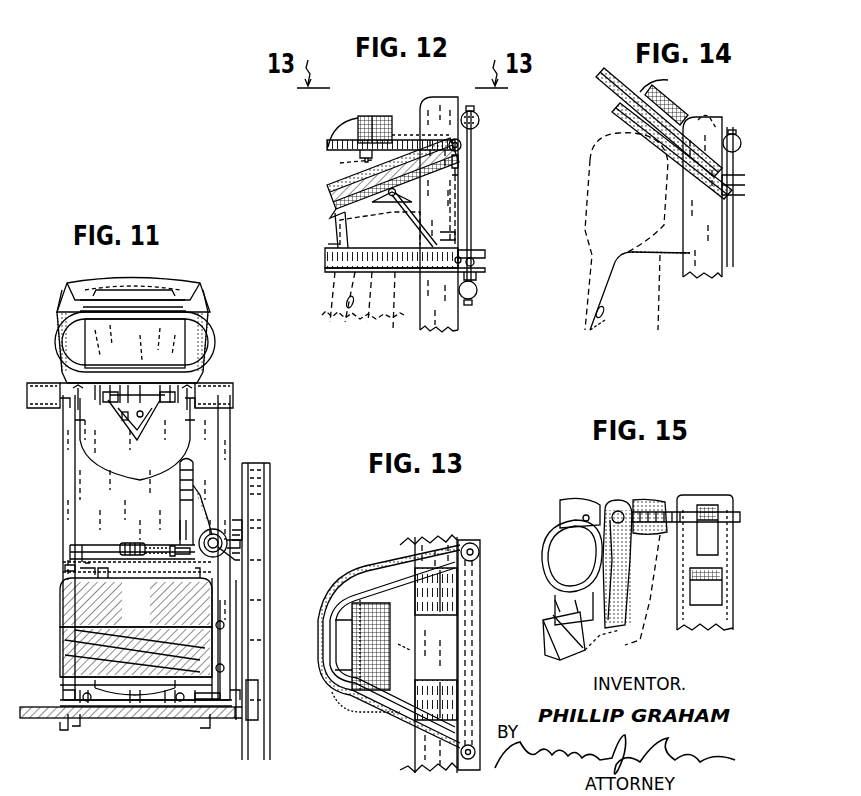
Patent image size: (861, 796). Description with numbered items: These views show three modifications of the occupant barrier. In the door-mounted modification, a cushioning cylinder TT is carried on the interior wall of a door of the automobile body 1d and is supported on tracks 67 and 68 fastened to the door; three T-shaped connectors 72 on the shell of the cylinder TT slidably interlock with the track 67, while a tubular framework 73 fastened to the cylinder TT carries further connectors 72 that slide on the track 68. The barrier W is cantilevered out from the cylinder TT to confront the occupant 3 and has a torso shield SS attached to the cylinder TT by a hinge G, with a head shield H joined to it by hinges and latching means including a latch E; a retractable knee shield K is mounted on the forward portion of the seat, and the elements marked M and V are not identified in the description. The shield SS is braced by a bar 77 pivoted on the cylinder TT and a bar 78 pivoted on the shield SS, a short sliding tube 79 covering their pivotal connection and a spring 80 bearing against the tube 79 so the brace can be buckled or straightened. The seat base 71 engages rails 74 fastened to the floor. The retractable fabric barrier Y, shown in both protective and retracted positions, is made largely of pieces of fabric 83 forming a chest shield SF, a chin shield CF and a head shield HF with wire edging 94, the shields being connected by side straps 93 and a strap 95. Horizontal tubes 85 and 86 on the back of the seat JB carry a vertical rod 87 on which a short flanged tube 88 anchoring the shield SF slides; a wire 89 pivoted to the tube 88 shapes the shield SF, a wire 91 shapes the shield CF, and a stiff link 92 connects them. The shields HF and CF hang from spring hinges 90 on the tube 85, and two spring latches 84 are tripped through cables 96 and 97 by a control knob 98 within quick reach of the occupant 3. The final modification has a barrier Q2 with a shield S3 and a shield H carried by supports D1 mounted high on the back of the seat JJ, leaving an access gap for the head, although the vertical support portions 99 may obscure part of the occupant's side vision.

In FIG. 11, the barrier W is at (49, 282).
In FIG. 11, the head shield H is at (48, 300).
In FIG. 15, the head shield H is at (609, 497).
In FIG. 11, the helmet top member M is at (152, 295).
In FIG. 11, the visor V is at (45, 337).
In FIG. 11, the torso shield SS is at (209, 443).
In FIG. 11, the latch E is at (131, 428).
In FIG. 11, the hinge G is at (209, 491).
In FIG. 11, the track 67 is at (225, 535).
In FIG. 11, the T-shaped connectors 72 is at (232, 550).
In FIG. 11, the bar 78 is at (100, 536).
In FIG. 11, the sliding tube 79 is at (125, 542).
In FIG. 11, the spring 80 is at (152, 546).
In FIG. 11, the bar 77 is at (172, 545).
In FIG. 11, the cushioning cylinder TT is at (199, 568).
In FIG. 11, the tubular framework 73 is at (220, 600).
In FIG. 11, the knee shield K is at (115, 677).
In FIG. 11, the seat base 71 is at (200, 690).
In FIG. 11, the rails 74 is at (70, 700).
In FIG. 11, the automobile body 1d is at (137, 719).
In FIG. 11, the track 68 is at (233, 708).
In FIG. 12, the seat JB is at (442, 338).
In FIG. 14, the seat JB is at (709, 289).
In FIG. 13, the seat JB is at (438, 527).
In FIG. 12, the head shield HF is at (322, 126).
In FIG. 14, the head shield HF is at (696, 99).
In FIG. 13, the head shield HF is at (370, 705).
In FIG. 12, the fabric 83 is at (365, 130).
In FIG. 12, the hinges 90 is at (450, 138).
In FIG. 13, the hinges 90 is at (437, 618).
In FIG. 12, the horizontal tube 85 is at (480, 121).
In FIG. 13, the horizontal tube 85 is at (470, 610).
In FIG. 12, the retractable fabric barrier Y is at (271, 159).
In FIG. 14, the retractable fabric barrier Y is at (626, 130).
In FIG. 12, the wire edging 94 is at (330, 150).
In FIG. 12, the side straps 93 is at (370, 161).
In FIG. 12, the chin shield CF is at (283, 216).
In FIG. 14, the chin shield CF is at (605, 58).
In FIG. 13, the chin shield CF is at (366, 612).
In FIG. 12, the wire 91 is at (332, 218).
In FIG. 12, the link 92 is at (405, 217).
In FIG. 12, the spring latches 84 is at (462, 165).
In FIG. 12, the cable 96 is at (460, 193).
In FIG. 14, the cable 96 is at (632, 252).
In FIG. 12, the vertical rod 87 is at (473, 214).
In FIG. 12, the cable 97 is at (458, 238).
In FIG. 12, the chest shield SF is at (285, 260).
In FIG. 14, the chest shield SF is at (608, 104).
In FIG. 13, the chest shield SF is at (357, 566).
In FIG. 12, the strap 95 is at (332, 245).
In FIG. 12, the short flanged tube 88 is at (476, 262).
In FIG. 12, the horizontal tube 86 is at (479, 294).
In FIG. 13, the horizontal tube 86 is at (474, 540).
In FIG. 12, the wire 89 is at (362, 301).
In FIG. 12, the control knob 98 is at (364, 325).
In FIG. 14, the control knob 98 is at (587, 339).
In FIG. 12, the occupant 3 is at (395, 342).
In FIG. 14, the occupant 3 is at (660, 333).
In FIG. 13, the occupant 3 is at (411, 652).
In FIG. 15, the occupant 3 is at (606, 646).
In FIG. 15, the barrier Q2 is at (572, 485).
In FIG. 15, the supports D1 is at (679, 496).
In FIG. 15, the seat JJ is at (709, 486).
In FIG. 15, the vertical support portions 99 is at (612, 596).
In FIG. 15, the shield S3 is at (541, 664).